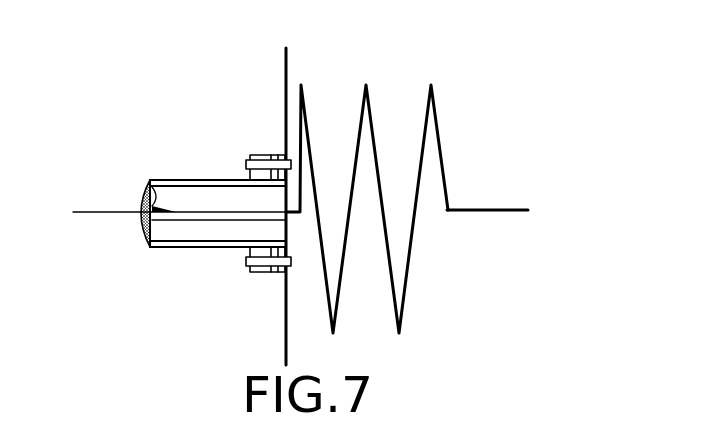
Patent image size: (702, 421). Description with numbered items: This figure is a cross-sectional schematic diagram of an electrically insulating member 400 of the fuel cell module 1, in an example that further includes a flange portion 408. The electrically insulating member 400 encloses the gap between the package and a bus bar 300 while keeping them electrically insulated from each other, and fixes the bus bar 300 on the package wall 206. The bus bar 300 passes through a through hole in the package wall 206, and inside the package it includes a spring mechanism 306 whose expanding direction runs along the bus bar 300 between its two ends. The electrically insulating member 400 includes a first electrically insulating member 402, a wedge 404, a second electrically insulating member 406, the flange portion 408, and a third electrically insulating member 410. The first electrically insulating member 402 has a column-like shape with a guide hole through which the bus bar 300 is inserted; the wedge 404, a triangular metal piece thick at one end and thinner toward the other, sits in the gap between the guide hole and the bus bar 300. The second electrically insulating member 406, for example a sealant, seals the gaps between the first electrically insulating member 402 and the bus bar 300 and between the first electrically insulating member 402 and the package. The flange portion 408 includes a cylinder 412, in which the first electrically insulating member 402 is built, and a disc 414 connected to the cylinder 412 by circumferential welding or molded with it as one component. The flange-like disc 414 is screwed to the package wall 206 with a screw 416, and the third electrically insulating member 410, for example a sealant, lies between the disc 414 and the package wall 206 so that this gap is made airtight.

The fuel cell module 1 is at (321, 182).
The package wall 206 is at (283, 67).
The bus bar 300 is at (492, 222).
The spring mechanism 306 is at (440, 140).
The electrically insulating member 400 is at (174, 200).
The first electrically insulating member 402 is at (186, 193).
The wedge 404 is at (148, 179).
The second electrically insulating member 406 is at (142, 236).
The flange portion 408 is at (172, 261).
The third electrically insulating member 410 is at (275, 273).
The cylinder 412 is at (161, 249).
The disc 414 is at (258, 273).
The screw 416 is at (246, 263).